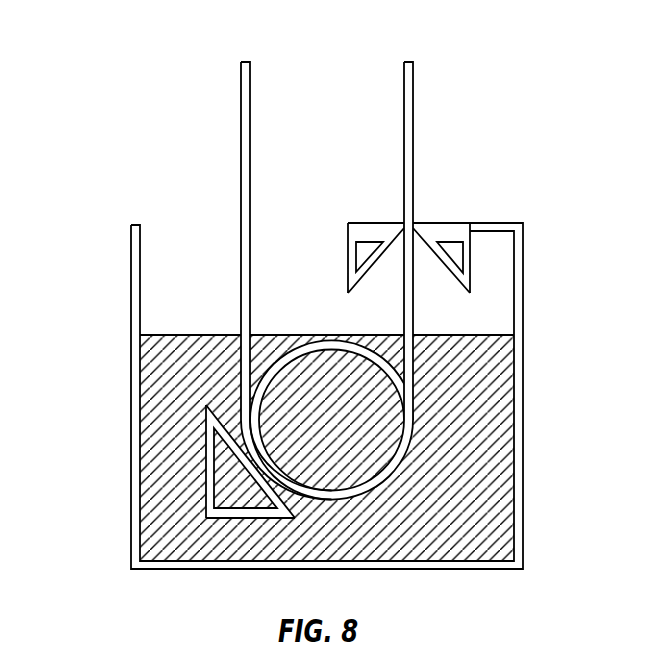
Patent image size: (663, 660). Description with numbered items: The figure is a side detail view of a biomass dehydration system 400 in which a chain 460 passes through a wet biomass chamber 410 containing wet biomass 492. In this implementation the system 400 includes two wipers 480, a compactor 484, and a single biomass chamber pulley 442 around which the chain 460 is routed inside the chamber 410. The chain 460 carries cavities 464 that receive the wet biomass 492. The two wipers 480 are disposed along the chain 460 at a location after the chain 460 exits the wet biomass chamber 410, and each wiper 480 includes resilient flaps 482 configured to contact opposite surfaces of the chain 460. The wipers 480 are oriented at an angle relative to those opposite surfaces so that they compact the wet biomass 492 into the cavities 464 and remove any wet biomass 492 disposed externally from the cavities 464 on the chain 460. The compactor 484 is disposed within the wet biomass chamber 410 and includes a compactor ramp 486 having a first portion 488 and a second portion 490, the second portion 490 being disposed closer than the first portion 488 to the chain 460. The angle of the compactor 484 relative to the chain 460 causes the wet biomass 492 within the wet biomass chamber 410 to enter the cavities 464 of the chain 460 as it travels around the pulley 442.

The biomass dehydration system 400 is at (97, 152).
The wet biomass chamber 410 is at (515, 379).
The wet biomass 492 is at (488, 438).
The chain 460 is at (413, 270).
The cavities 464 is at (414, 144).
The biomass chamber pulley 442 is at (368, 452).
The wipers 480 is at (444, 237).
The resilient flaps 482 is at (430, 247).
The second portion 490 is at (172, 443).
The first portion 488 is at (199, 473).
The compactor ramp 486 is at (257, 475).
The compactor 484 is at (227, 528).